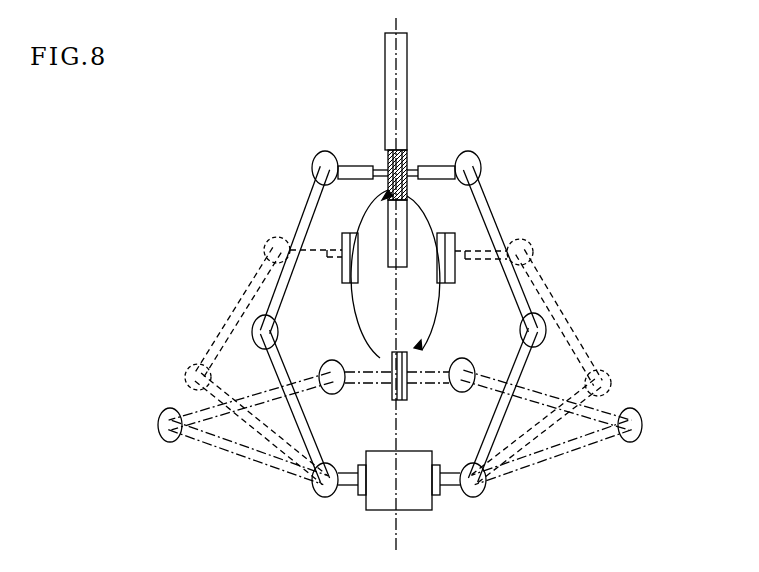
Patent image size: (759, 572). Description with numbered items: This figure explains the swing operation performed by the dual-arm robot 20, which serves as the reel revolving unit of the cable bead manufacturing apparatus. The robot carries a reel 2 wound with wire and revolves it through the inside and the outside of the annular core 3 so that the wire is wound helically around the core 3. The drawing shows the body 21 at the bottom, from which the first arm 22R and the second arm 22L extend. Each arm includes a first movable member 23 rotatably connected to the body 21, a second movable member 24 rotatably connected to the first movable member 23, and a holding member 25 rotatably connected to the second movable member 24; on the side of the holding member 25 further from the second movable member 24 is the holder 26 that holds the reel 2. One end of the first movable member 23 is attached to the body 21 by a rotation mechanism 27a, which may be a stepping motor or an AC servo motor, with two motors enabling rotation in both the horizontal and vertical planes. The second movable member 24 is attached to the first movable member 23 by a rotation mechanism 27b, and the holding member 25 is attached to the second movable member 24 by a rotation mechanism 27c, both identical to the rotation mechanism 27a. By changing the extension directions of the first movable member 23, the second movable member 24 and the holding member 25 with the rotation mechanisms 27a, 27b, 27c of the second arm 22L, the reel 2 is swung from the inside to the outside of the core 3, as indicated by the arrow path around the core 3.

The dual-arm robot 20 is at (543, 185).
The annular core 3 is at (408, 72).
The holder 26 is at (381, 167).
The holding member 25 is at (357, 172).
The rotation mechanism 27c is at (318, 158).
The reel 2 is at (335, 235).
The second movable member 24 is at (298, 246).
The second arm 22L is at (267, 295).
The first arm 22R is at (522, 295).
The rotation mechanism 27b is at (255, 326).
The first movable member 23 is at (268, 362).
The rotation mechanism 27a is at (310, 486).
The body 21 is at (408, 495).